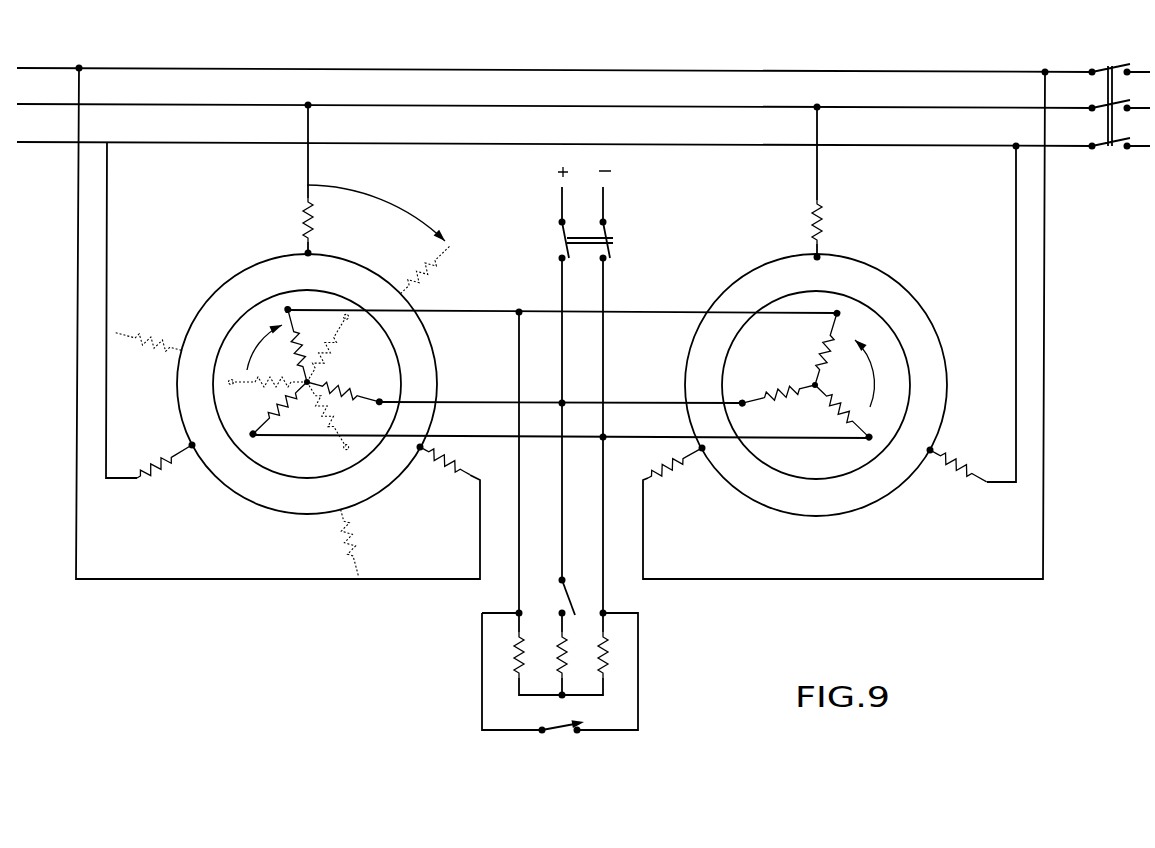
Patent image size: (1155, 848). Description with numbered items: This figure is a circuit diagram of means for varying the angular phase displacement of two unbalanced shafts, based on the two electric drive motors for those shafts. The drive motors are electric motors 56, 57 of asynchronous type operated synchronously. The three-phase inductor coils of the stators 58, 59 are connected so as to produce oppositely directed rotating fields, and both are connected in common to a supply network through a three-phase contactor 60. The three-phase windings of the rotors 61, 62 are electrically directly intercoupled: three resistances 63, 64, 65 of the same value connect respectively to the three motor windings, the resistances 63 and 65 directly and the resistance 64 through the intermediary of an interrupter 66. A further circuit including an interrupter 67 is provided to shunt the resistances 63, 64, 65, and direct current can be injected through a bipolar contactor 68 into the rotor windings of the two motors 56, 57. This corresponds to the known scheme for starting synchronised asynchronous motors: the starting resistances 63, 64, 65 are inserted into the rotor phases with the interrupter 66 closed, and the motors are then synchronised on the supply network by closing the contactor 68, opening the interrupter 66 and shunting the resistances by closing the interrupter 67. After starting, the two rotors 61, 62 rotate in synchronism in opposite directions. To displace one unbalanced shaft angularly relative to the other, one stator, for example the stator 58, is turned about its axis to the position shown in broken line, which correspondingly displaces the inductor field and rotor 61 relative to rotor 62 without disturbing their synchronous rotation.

The electric motor 56 is at (300, 406).
The electric motor 57 is at (814, 401).
The stator 58 is at (218, 290).
The stator 59 is at (915, 300).
The three-phase contactor 60 is at (1109, 147).
The rotor 61 is at (400, 368).
The rotor 62 is at (775, 385).
The resistance 63 is at (512, 655).
The resistance 64 is at (570, 630).
The resistance 65 is at (610, 655).
The interrupter 66 is at (566, 598).
The interrupter 67 is at (557, 731).
The bipolar contactor 68 is at (627, 222).